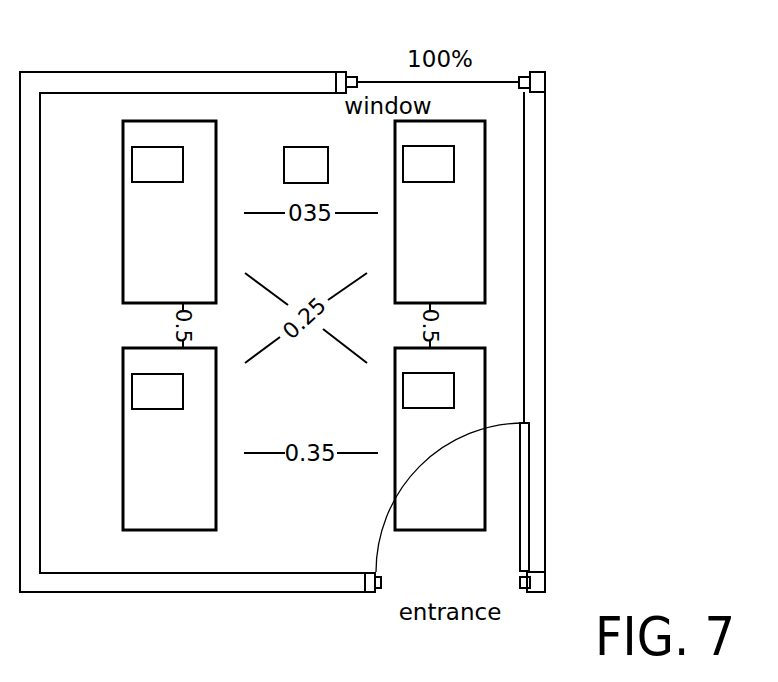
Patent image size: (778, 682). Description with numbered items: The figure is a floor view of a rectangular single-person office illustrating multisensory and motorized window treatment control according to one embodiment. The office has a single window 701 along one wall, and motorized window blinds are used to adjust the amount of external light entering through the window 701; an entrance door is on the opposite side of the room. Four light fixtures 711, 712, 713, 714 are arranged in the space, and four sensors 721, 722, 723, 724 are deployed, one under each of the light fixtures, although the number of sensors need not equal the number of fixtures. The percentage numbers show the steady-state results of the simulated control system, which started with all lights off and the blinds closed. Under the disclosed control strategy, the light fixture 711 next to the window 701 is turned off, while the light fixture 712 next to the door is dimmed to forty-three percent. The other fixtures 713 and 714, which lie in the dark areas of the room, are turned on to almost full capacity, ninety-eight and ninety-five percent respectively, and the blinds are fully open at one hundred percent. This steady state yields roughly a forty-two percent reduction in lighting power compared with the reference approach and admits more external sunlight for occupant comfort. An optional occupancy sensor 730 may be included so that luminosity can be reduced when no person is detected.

The window 701 is at (493, 75).
The light fixture 711 is at (414, 212).
The light fixture 712 is at (412, 439).
The light fixture 713 is at (132, 439).
The light fixture 714 is at (132, 212).
The sensor 721 is at (428, 164).
The sensor 722 is at (428, 390).
The sensor 723 is at (157, 391).
The sensor 724 is at (157, 164).
The occupancy sensor 730 is at (291, 146).